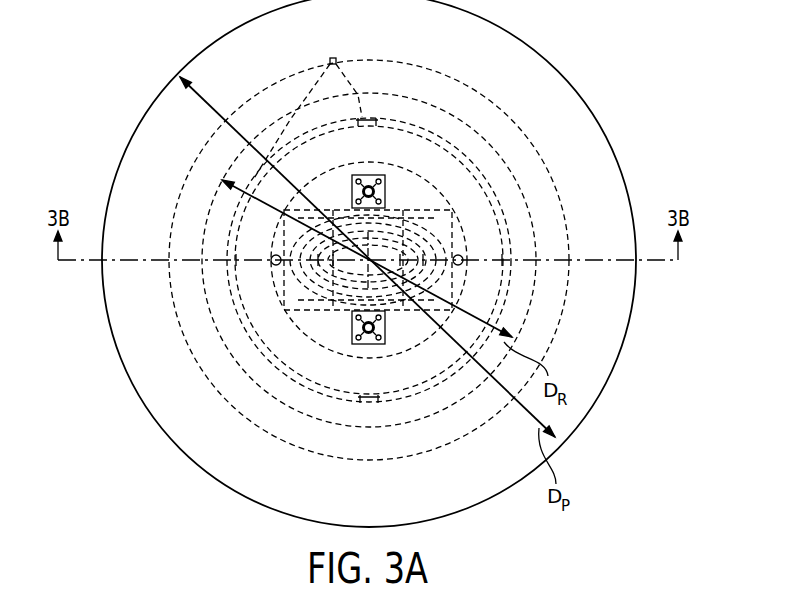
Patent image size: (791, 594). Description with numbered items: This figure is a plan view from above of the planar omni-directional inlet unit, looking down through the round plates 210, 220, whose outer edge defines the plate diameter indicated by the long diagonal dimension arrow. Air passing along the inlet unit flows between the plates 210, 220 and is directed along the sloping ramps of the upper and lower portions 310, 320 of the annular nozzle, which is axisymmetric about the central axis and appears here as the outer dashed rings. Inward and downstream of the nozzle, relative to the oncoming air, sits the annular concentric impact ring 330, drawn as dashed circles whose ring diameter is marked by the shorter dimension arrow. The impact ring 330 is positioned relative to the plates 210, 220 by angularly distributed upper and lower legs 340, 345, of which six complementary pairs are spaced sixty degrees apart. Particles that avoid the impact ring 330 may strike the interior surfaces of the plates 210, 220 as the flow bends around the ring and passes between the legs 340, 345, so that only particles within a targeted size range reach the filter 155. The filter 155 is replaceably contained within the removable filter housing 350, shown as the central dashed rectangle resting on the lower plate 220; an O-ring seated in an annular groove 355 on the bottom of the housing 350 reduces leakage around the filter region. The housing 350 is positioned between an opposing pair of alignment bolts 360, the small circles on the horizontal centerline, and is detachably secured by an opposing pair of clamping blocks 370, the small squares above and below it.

The filter 155 is at (350, 396).
The upper plate 210 is at (338, 263).
The lower plate 220 is at (134, 396).
The upper portion of annular nozzle 310 is at (454, 260).
The lower portion of annular nozzle 320 is at (572, 285).
The impact ring 330 is at (438, 372).
The upper legs 340 is at (316, 212).
The lower legs 345 is at (333, 58).
The filter housing 350 is at (436, 218).
The annular groove 355 is at (434, 102).
The alignment bolts 360 is at (469, 252).
The clamping block 370 is at (394, 177).